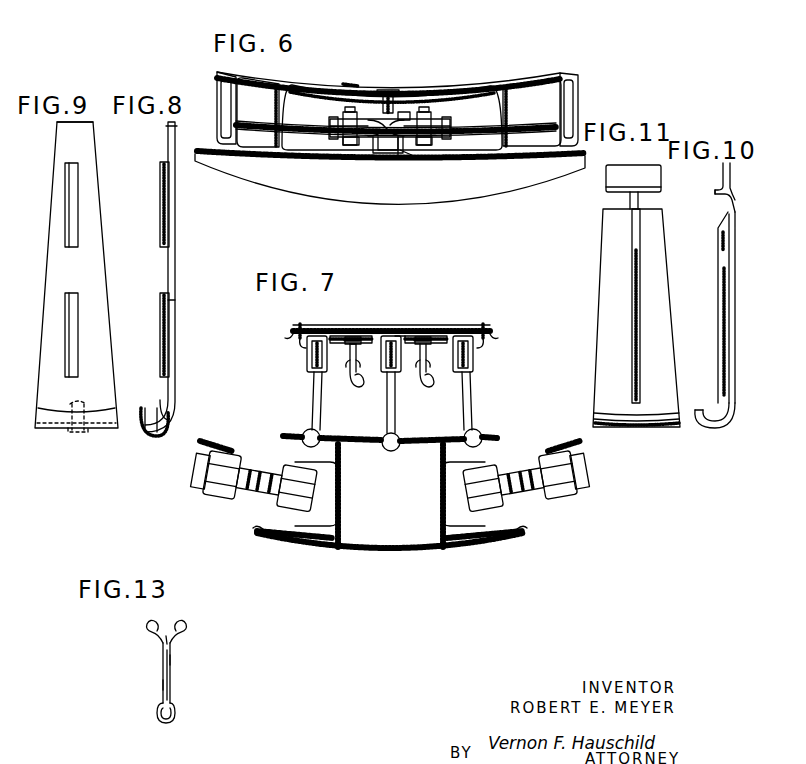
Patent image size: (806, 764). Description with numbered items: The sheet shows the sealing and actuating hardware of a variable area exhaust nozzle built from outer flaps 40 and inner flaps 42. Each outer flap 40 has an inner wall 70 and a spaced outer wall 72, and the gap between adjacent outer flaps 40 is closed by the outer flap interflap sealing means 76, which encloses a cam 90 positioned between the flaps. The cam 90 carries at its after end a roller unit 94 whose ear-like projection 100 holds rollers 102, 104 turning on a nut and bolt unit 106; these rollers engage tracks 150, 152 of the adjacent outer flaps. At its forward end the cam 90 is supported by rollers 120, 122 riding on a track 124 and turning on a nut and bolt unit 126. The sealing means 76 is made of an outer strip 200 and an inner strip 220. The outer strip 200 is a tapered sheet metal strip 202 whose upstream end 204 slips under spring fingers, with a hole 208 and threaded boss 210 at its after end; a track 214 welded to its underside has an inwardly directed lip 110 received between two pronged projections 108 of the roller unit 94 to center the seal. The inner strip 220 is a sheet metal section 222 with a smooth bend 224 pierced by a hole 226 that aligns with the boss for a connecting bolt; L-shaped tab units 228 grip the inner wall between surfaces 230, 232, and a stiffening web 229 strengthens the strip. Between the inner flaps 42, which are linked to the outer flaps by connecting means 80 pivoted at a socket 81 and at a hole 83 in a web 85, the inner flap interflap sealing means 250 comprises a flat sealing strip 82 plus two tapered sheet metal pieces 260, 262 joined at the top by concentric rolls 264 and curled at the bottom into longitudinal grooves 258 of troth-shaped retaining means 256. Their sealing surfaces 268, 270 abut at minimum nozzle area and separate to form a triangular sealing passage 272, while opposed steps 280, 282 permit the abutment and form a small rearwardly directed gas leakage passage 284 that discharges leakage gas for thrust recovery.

In FIG. 6, the outer flap 40 is at (257, 88).
In FIG. 7, the outer flap 40 is at (375, 551).
In FIG. 7, the inner flap 42 is at (300, 325).
In FIG. 6, the inner wall 70 is at (293, 86).
In FIG. 6, the outer wall 72 is at (312, 153).
In FIG. 7, the outer flap interflap sealing means 76 is at (257, 535).
In FIG. 7, the connecting means or link 80 is at (472, 397).
In FIG. 7, the socket 81 is at (385, 470).
In FIG. 7, the inner flap interflap sealing strip 82 is at (340, 327).
In FIG. 7, the hole 83 is at (390, 336).
In FIG. 7, the web 85 is at (407, 336).
In FIG. 6, the cam 90 is at (405, 113).
In FIG. 6, the roller unit 94 is at (366, 110).
In FIG. 6, the ear-like projection 100 is at (399, 152).
In FIG. 6, the roller 102 is at (446, 131).
In FIG. 6, the roller 104 is at (333, 131).
In FIG. 6, the nut and bolt unit 106 is at (432, 117).
In FIG. 6, the pronged projections 108 is at (392, 150).
In FIG. 6, the lip 110 is at (385, 149).
In FIG. 9, the lip 110 is at (80, 185).
In FIG. 7, the roller 120 is at (292, 468).
In FIG. 7, the roller 122 is at (196, 502).
In FIG. 7, the track 124 is at (225, 450).
In FIG. 7, the nut and bolt unit 126 is at (203, 480).
In FIG. 6, the track 150 is at (222, 84).
In FIG. 6, the track 152 is at (566, 110).
In FIG. 6, the outer strip 200 is at (412, 157).
In FIG. 8, the outer strip 200 is at (185, 240).
In FIG. 9, the sheet metal strip 202 is at (93, 281).
In FIG. 8, the sheet metal strip 202 is at (177, 274).
In FIG. 9, the upstream end 204 is at (78, 135).
In FIG. 8, the upstream end 204 is at (172, 131).
In FIG. 9, the hole 208 is at (80, 432).
In FIG. 8, the hole 208 is at (158, 434).
In FIG. 9, the boss 210 is at (80, 405).
In FIG. 8, the boss 210 is at (171, 406).
In FIG. 9, the track 214 is at (75, 211).
In FIG. 8, the track 214 is at (178, 219).
In FIG. 6, the inner strip 220 is at (354, 85).
In FIG. 11, the inner strip 220 is at (612, 348).
In FIG. 10, the inner strip 220 is at (722, 257).
In FIG. 11, the sheet metal section 222 is at (610, 298).
In FIG. 11, the smooth bend 224 is at (641, 429).
In FIG. 10, the smooth bend 224 is at (705, 397).
In FIG. 10, the hole 226 is at (714, 430).
In FIG. 11, the tab unit 228 is at (633, 178).
In FIG. 10, the tab unit 228 is at (723, 172).
In FIG. 6, the stiffening web 229 is at (396, 101).
In FIG. 11, the stiffening web 229 is at (632, 268).
In FIG. 10, the stiffening web 229 is at (722, 275).
In FIG. 10, the surface 230 is at (719, 233).
In FIG. 10, the surface 232 is at (736, 186).
In FIG. 7, the inner flap interflap sealing means 250 is at (343, 380).
In FIG. 7, the troth-shaped retaining means 256 is at (292, 335).
In FIG. 7, the longitudinal groove 258 is at (305, 341).
In FIG. 13, the tapered sheet metal piece 260 is at (163, 668).
In FIG. 13, the tapered sheet metal piece 262 is at (172, 660).
In FIG. 7, the concentric sheet metal rolls 264 is at (352, 383).
In FIG. 13, the concentric sheet metal rolls 264 is at (163, 724).
In FIG. 13, the sealing surface 268 is at (170, 677).
In FIG. 13, the sealing surface 270 is at (163, 688).
In FIG. 7, the triangular sealing passage 272 is at (373, 326).
In FIG. 7, the step 280 is at (347, 365).
In FIG. 13, the step 280 is at (161, 639).
In FIG. 7, the step 282 is at (356, 379).
In FIG. 13, the step 282 is at (174, 639).
In FIG. 13, the gas leakage passage 284 is at (167, 633).